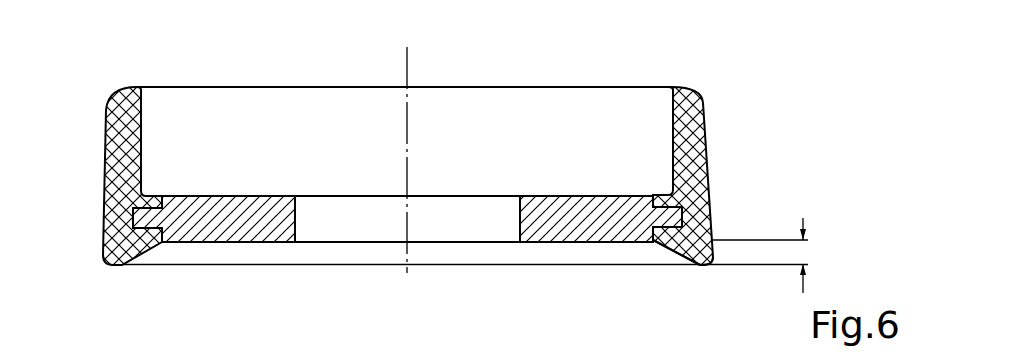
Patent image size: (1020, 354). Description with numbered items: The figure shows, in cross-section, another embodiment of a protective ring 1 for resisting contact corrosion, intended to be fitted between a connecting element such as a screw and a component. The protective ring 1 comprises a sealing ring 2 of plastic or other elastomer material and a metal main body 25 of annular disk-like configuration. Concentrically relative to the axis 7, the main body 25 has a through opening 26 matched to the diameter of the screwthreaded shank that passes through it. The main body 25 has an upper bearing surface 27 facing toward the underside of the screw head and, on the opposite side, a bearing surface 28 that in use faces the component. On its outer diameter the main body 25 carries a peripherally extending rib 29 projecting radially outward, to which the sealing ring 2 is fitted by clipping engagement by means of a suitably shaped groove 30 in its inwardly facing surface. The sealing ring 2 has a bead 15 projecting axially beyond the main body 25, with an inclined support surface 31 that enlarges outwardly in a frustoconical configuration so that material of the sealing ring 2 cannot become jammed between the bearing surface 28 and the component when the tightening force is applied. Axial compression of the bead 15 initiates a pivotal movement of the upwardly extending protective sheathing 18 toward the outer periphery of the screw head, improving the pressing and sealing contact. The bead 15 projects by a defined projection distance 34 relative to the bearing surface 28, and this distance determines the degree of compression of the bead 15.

The protective ring 1 is at (731, 111).
The sealing ring 2 is at (705, 100).
The axis 7 is at (408, 134).
The bead 15 is at (702, 265).
The protective sheathing 18 is at (107, 108).
The main body 25 is at (562, 217).
The through opening 26 is at (477, 215).
The upper bearing surface 27 is at (222, 197).
The bearing surface 28 is at (232, 243).
The rib 29 is at (692, 200).
The groove 30 is at (698, 207).
The support surface 31 is at (670, 247).
The projection distance 34 is at (802, 253).